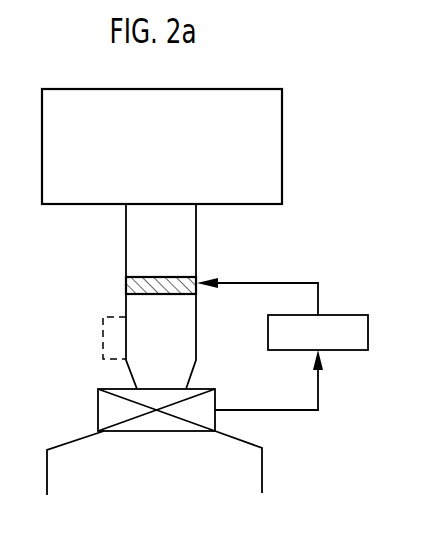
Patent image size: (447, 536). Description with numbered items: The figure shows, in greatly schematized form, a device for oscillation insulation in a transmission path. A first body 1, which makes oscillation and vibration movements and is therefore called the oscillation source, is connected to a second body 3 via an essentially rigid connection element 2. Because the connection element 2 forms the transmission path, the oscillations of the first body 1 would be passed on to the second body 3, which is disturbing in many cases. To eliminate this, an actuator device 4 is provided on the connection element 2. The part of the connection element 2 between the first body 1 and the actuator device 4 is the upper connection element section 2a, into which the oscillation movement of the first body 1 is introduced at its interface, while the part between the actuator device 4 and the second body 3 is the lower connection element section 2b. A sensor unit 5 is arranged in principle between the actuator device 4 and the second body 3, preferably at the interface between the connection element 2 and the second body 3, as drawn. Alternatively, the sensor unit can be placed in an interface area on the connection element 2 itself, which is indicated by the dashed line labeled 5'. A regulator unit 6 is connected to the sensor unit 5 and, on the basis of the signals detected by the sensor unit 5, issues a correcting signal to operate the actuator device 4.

The first body 1 is at (266, 147).
The connection element 2 is at (156, 296).
The upper connection element section 2a is at (180, 246).
The lower connection element section 2b is at (180, 346).
The second body 3 is at (234, 477).
The actuator device 4 is at (126, 285).
The sensor unit 5 is at (130, 410).
The sensor unit 5' is at (87, 338).
The regulator unit 6 is at (355, 333).